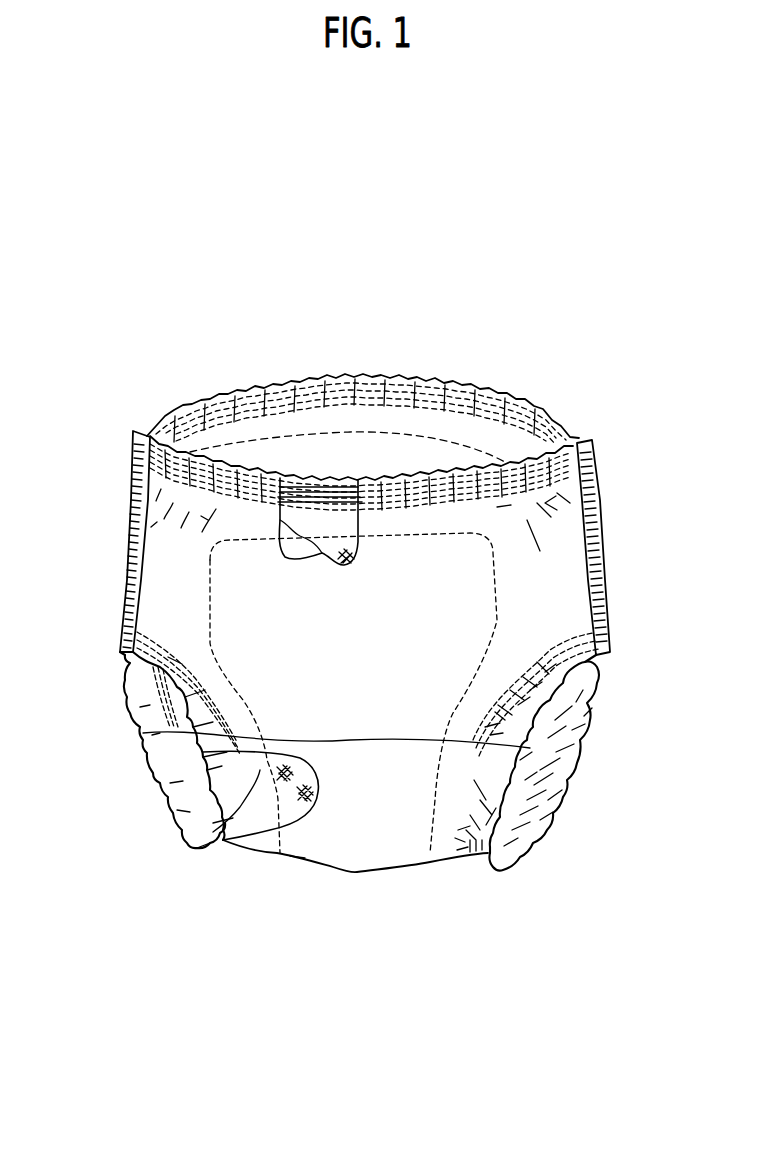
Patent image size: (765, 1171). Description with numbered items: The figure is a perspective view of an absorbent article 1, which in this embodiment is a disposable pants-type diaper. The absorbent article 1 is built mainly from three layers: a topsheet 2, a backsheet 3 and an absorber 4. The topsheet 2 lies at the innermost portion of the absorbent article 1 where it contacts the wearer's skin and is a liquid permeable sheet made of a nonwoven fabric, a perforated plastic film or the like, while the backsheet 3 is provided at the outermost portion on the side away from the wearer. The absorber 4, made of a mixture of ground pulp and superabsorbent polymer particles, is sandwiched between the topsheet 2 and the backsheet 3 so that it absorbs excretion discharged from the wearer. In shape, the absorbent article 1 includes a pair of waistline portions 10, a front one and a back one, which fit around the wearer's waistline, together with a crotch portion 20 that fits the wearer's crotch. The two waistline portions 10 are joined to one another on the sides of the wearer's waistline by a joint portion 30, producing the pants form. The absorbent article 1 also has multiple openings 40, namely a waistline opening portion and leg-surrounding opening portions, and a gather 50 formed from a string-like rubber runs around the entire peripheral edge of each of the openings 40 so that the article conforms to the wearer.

The absorbent article 1 is at (535, 318).
The topsheet 2 is at (215, 843).
The backsheet 3 is at (297, 850).
The absorber 4 is at (230, 758).
The waistline portion 10 is at (531, 404).
The crotch portion 20 is at (437, 878).
The joint portion 30 is at (131, 542).
The opening 40 is at (242, 433).
The gather 50 is at (293, 487).